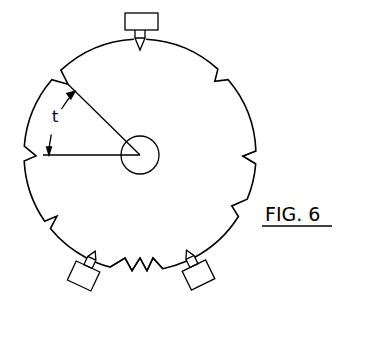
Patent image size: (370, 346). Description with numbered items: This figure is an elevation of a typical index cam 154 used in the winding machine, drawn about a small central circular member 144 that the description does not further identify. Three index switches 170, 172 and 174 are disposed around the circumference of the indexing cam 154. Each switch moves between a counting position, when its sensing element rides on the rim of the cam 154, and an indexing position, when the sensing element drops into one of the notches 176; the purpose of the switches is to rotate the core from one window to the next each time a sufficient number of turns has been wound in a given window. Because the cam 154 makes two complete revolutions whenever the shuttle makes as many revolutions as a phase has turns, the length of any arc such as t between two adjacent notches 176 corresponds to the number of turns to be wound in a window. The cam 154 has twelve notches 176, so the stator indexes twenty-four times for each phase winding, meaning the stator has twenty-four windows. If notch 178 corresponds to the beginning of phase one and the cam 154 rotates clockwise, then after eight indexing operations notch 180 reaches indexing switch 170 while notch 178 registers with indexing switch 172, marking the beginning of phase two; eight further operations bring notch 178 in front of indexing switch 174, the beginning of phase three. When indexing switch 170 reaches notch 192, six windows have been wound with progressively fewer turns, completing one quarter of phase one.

The shaft 144 is at (144, 160).
The index cam 154 is at (227, 104).
The index switch 170 is at (145, 23).
The index switch 172 is at (198, 280).
The index switch 174 is at (80, 272).
The notches 176 is at (257, 152).
The notch 178 is at (147, 34).
The notch 180 is at (188, 253).
The notch 192 is at (138, 268).